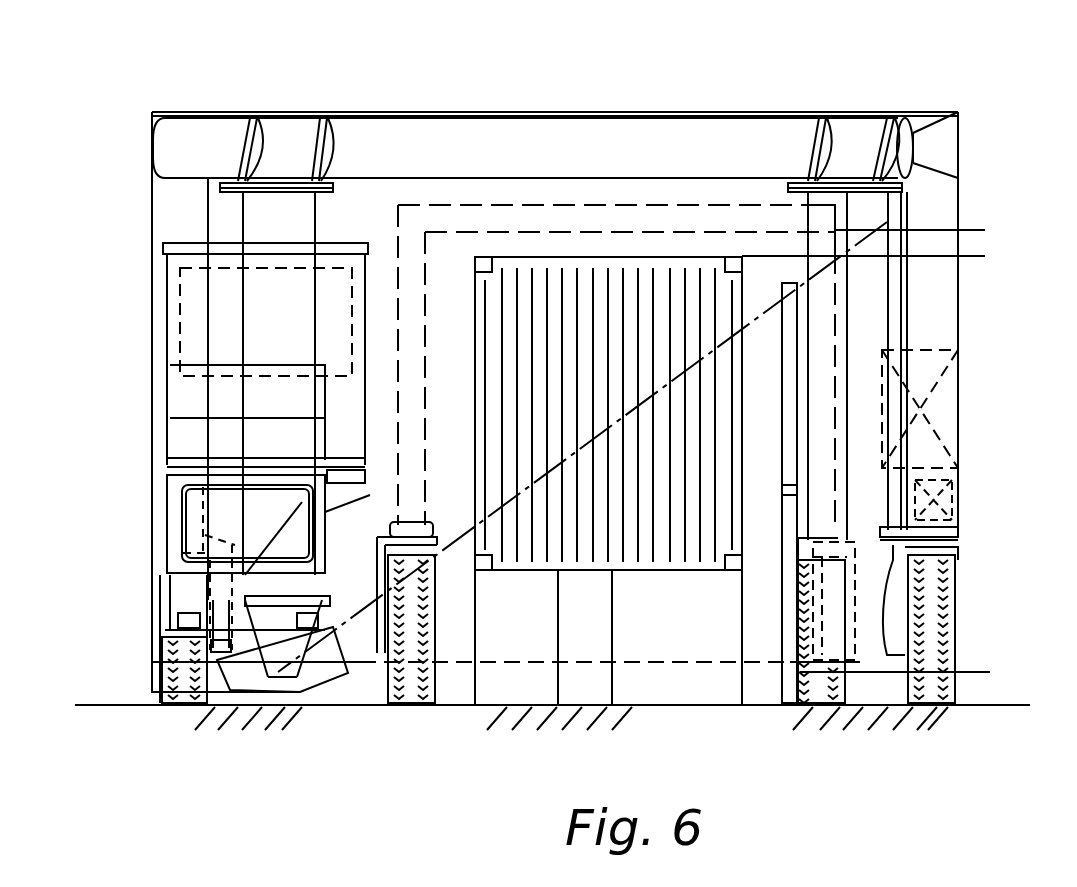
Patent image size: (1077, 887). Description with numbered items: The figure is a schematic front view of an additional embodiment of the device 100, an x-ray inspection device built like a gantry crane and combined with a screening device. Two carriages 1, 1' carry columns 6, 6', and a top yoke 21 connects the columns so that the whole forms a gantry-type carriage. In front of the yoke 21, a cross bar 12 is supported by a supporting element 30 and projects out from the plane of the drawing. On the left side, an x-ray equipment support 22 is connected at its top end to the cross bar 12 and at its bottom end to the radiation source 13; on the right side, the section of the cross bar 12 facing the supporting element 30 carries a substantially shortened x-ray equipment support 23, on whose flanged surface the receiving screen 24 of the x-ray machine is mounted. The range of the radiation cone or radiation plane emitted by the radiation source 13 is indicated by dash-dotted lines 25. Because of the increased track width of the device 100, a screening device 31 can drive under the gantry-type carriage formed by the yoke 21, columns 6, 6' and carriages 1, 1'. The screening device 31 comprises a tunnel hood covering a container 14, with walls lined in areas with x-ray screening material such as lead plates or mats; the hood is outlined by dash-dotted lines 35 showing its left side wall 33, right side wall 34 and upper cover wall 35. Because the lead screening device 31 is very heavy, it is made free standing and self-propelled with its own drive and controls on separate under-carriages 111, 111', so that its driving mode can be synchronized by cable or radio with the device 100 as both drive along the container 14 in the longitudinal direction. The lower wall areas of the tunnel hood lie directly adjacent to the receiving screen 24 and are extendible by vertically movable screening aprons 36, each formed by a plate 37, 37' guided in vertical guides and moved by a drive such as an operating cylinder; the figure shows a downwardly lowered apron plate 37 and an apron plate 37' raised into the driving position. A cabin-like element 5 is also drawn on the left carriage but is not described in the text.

The device 100 is at (168, 84).
The carriage 1 is at (204, 639).
The carriage 1' is at (962, 615).
The control cabin 5 is at (222, 520).
The column 6 is at (214, 359).
The column 6' is at (930, 366).
The cross bar 12 is at (637, 128).
The radiation source 13 is at (321, 674).
The container 14 is at (673, 262).
The top yoke 21 is at (925, 118).
The x-ray equipment support 22 is at (262, 305).
The x-ray equipment support (carrier) 23 is at (885, 167).
The receiving screen 24 is at (863, 353).
The dash-dotted lines 25 is at (863, 243).
The supporting element 30 is at (955, 145).
The screening device 31 is at (395, 200).
The left side wall 33 is at (419, 318).
The right side wall 34 is at (825, 415).
The upper cover wall 35 is at (522, 218).
The screening apron 36 is at (775, 592).
The plate 37 is at (743, 599).
The plate 37' is at (742, 384).
The under-carriage 111 is at (472, 629).
The under-carriage 111' is at (858, 660).